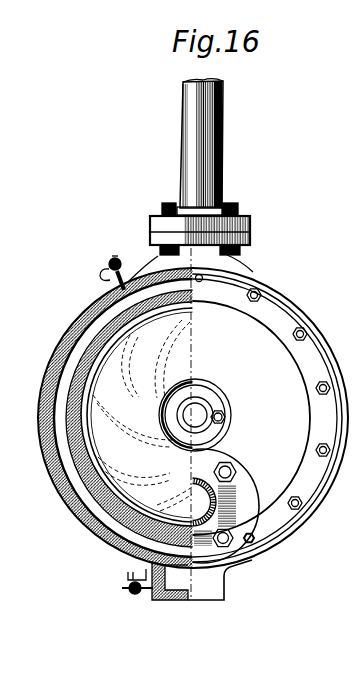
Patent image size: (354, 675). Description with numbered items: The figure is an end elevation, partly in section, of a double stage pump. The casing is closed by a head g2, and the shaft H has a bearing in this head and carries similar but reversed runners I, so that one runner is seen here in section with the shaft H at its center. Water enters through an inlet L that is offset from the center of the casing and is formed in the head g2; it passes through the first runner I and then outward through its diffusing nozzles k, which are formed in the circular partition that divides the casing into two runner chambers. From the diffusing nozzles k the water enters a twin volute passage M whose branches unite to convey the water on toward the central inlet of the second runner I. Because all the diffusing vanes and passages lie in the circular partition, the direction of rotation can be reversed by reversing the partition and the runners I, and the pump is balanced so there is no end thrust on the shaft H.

The head g2 is at (267, 315).
The diffusing nozzles k is at (88, 350).
The twin volute passage M is at (110, 313).
The runners I is at (143, 487).
The shaft H is at (197, 418).
The inlet L is at (253, 545).